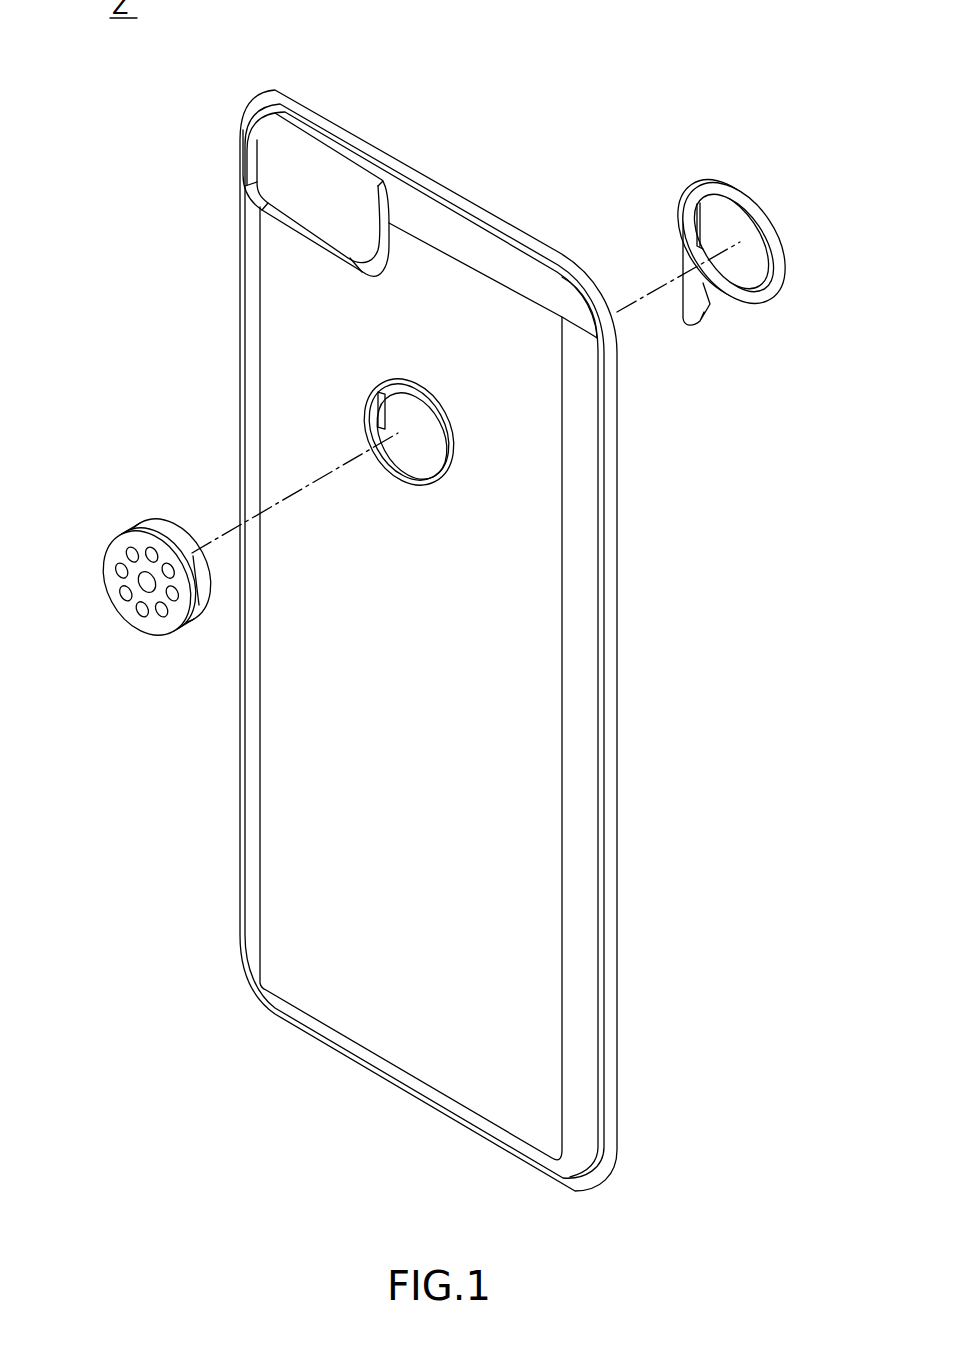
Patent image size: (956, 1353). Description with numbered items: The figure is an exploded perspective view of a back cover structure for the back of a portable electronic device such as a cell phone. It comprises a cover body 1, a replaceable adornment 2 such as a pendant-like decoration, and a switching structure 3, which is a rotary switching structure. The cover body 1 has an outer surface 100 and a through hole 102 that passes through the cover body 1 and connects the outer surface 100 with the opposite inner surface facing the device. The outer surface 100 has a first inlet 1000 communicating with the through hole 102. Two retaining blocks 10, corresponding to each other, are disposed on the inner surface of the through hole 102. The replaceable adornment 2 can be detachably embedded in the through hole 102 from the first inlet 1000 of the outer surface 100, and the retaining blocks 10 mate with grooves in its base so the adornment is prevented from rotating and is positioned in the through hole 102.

The cover body 1 is at (470, 166).
The replaceable adornment 2 is at (97, 530).
The switching structure 3 is at (755, 178).
The retaining block 10 is at (380, 410).
The outer surface 100 is at (296, 673).
The through hole 102 is at (421, 448).
The first inlet 1000 is at (380, 462).